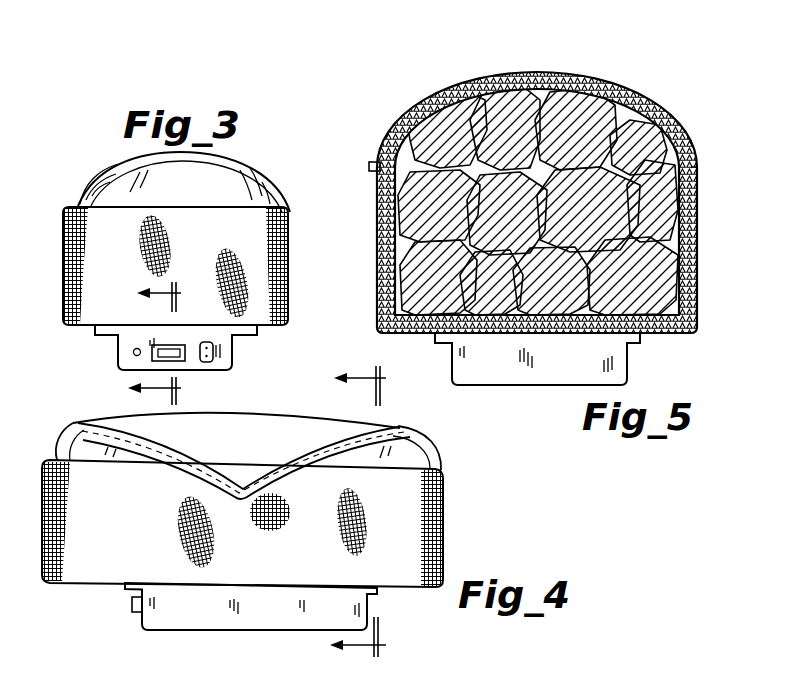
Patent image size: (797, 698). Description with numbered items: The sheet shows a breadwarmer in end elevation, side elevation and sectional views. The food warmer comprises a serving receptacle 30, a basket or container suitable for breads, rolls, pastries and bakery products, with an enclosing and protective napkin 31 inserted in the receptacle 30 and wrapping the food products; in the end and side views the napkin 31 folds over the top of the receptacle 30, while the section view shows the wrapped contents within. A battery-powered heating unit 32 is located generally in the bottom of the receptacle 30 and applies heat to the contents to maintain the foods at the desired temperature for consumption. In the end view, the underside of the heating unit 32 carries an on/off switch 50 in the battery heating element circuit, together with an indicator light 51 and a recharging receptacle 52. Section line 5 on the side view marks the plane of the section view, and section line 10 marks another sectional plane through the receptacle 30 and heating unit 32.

In FIG. 3, the serving receptacle 30 is at (272, 256).
In FIG. 4, the serving receptacle 30 is at (445, 547).
In FIG. 5, the serving receptacle 30 is at (699, 166).
In FIG. 3, the napkin 31 is at (255, 168).
In FIG. 4, the napkin 31 is at (430, 453).
In FIG. 5, the napkin 31 is at (650, 62).
In FIG. 3, the heating unit 32 is at (245, 341).
In FIG. 4, the heating unit 32 is at (368, 617).
In FIG. 5, the heating unit 32 is at (528, 392).
In FIG. 3, the on/off switch 50 is at (183, 356).
In FIG. 4, the on/off switch 50 is at (132, 603).
In FIG. 3, the indicator light 51 is at (132, 352).
In FIG. 3, the recharging receptacle 52 is at (214, 352).
In FIG. 3, the section line 10- 10 is at (134, 344).
In FIG. 3, the section line 5— 5 is at (343, 384).
In FIG. 4, the section line 5— 5 is at (345, 639).